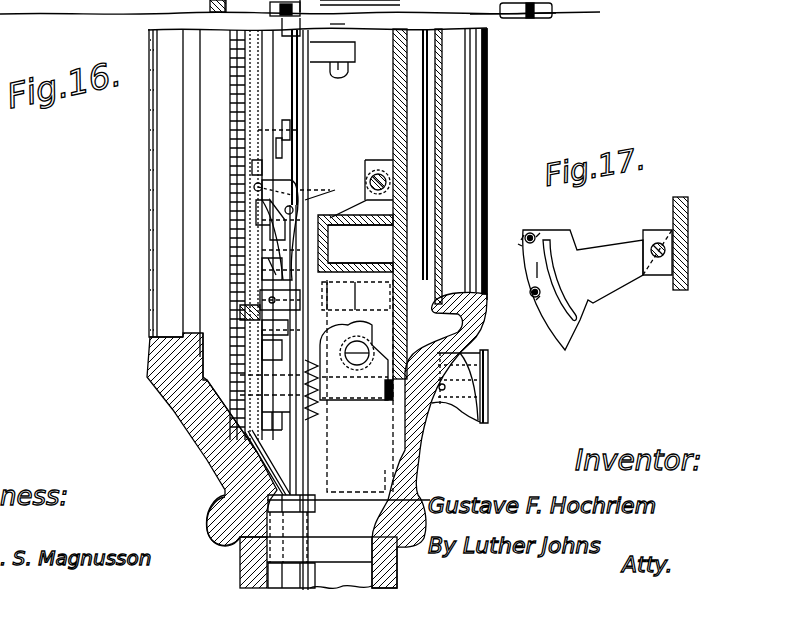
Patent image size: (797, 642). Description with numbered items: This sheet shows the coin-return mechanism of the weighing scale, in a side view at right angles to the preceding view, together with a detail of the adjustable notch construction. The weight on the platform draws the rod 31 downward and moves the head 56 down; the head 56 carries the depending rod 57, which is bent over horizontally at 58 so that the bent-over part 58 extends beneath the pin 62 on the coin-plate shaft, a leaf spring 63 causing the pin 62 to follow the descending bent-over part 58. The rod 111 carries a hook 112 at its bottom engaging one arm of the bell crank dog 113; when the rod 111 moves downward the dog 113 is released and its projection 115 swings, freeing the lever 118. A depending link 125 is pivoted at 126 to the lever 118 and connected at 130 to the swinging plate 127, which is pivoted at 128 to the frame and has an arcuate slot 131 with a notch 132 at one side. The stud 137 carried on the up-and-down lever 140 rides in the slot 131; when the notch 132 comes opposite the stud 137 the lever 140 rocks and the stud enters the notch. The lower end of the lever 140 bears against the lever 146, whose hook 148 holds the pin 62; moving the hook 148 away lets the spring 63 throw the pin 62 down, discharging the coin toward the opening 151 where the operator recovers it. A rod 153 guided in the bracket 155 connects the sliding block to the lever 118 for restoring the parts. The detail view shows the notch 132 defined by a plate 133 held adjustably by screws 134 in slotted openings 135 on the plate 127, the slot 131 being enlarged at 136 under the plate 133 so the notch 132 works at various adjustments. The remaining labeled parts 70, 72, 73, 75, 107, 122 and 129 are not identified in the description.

In FIG. 16, the rod 31 is at (312, 460).
In FIG. 16, the head 56 is at (240, 312).
In FIG. 16, the depending rod 57 is at (255, 415).
In FIG. 16, the bent-over part 58 is at (295, 432).
In FIG. 16, the pin 62 is at (262, 436).
In FIG. 16, the leaf spring 63 is at (315, 425).
In FIG. 16, the block 70 is at (362, 214).
In FIG. 16, the flange 72 is at (490, 390).
In FIG. 16, the bracket 73 is at (448, 405).
In FIG. 16, the rack 75 is at (233, 108).
In FIG. 16, the catch 107 is at (262, 300).
In FIG. 16, the rod 111 is at (341, 17).
In FIG. 16, the hook 112 is at (357, 70).
In FIG. 16, the bell crank lever 113 is at (292, 36).
In FIG. 16, the projection 115 is at (214, 524).
In FIG. 16, the lever 118 is at (285, 128).
In FIG. 16, the slide 122 is at (262, 328).
In FIG. 16, the depending link 125 is at (256, 200).
In FIG. 16, the pivotal connection 126 is at (276, 144).
In FIG. 17, the swinging plate 127 is at (645, 252).
In FIG. 16, the pivot 128 is at (376, 170).
In FIG. 17, the pivot 128 is at (658, 243).
In FIG. 16, the bracket 129 is at (326, 178).
In FIG. 16, the connection 130 is at (326, 191).
In FIG. 16, the arcuate slot 131 is at (262, 232).
In FIG. 17, the arcuate slot 131 is at (557, 278).
In FIG. 16, the notch 132 is at (252, 166).
In FIG. 17, the notch 132 is at (526, 244).
In FIG. 17, the plate 133 is at (522, 238).
In FIG. 17, the screws 134 is at (537, 236).
In FIG. 17, the slotted openings 135 is at (540, 238).
In FIG. 17, the enlargement 136 is at (531, 273).
In FIG. 16, the stud 137 is at (254, 188).
In FIG. 16, the up-and-down lever 140 is at (292, 33).
In FIG. 16, the lever 146 is at (262, 262).
In FIG. 16, the hook 148 is at (248, 466).
In FIG. 16, the opening 151 is at (420, 458).
In FIG. 16, the rod 153 is at (318, 333).
In FIG. 16, the bracket 155 is at (328, 305).